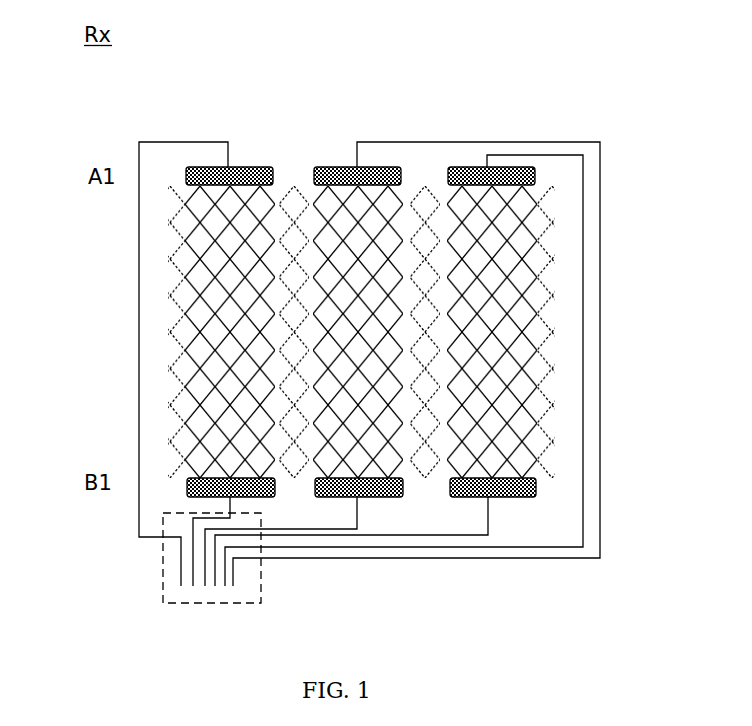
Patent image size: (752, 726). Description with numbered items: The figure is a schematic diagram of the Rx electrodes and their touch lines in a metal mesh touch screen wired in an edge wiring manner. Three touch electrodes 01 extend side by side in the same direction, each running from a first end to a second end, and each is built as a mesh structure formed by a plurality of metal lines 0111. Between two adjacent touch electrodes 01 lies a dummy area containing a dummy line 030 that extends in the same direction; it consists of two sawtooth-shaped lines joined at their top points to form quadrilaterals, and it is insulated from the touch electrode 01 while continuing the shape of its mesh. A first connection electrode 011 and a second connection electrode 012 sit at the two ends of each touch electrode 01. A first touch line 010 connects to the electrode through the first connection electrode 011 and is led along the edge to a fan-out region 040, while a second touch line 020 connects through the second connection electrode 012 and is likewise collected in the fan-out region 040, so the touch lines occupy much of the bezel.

The touch electrode 01 is at (230, 293).
The first touch line 010 is at (358, 296).
The first connection electrode 011 is at (463, 173).
The second connection electrode 012 is at (498, 488).
The second touch line 020 is at (360, 503).
The dummy line 030 is at (293, 158).
The fan-out region 040 is at (242, 603).
The metal line 0111 is at (187, 480).